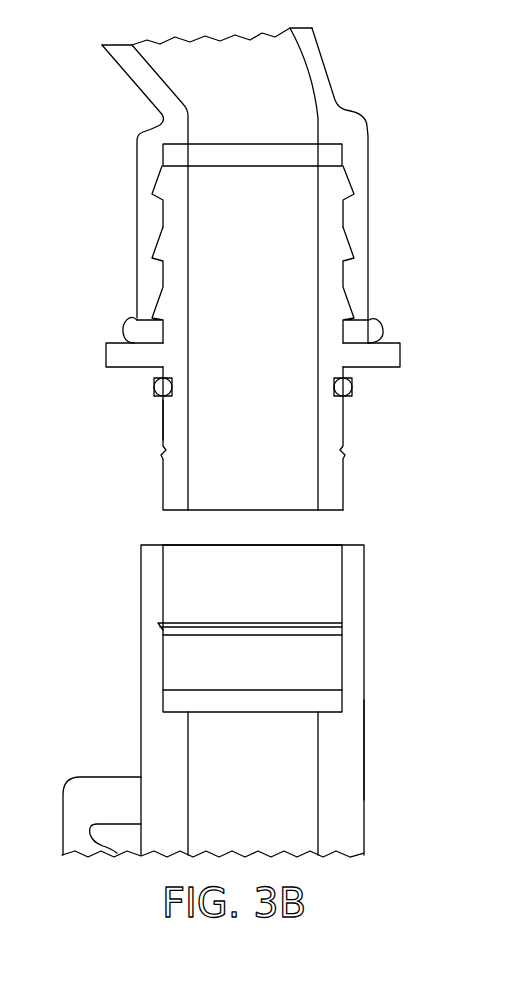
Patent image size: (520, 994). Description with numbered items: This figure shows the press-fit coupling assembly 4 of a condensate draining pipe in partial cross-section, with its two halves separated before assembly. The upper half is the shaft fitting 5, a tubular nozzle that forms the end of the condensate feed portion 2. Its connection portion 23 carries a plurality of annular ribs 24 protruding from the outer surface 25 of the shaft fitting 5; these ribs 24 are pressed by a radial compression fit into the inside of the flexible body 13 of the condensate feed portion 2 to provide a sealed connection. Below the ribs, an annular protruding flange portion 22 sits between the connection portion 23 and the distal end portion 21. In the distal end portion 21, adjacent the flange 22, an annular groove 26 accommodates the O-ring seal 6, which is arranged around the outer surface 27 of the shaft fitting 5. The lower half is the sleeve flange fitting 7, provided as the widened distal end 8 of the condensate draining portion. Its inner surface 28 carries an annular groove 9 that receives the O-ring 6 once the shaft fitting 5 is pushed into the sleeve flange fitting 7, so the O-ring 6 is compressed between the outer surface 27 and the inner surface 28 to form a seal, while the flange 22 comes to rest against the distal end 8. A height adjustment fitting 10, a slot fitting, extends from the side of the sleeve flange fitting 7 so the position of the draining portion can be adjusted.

The condensate feed portion 2 is at (295, 269).
The coupling assembly 4 is at (269, 658).
The shaft fitting 5 is at (337, 488).
The O-ring seal 6 is at (352, 387).
The sleeve flange fitting 7 is at (355, 773).
The distal end 8 is at (333, 548).
The annular groove 9 is at (338, 632).
The height adjustment fitting 10 is at (110, 787).
The body 13 is at (363, 173).
The distal end portion 21 is at (170, 473).
The annular protruding flange portion 22 is at (402, 352).
The connection portion 23 is at (173, 295).
The annular ribs 24 is at (155, 193).
The outer surface 25 is at (352, 333).
The annular groove 26 is at (172, 390).
The outer surface 27 is at (163, 427).
The inner surface 28 is at (170, 662).